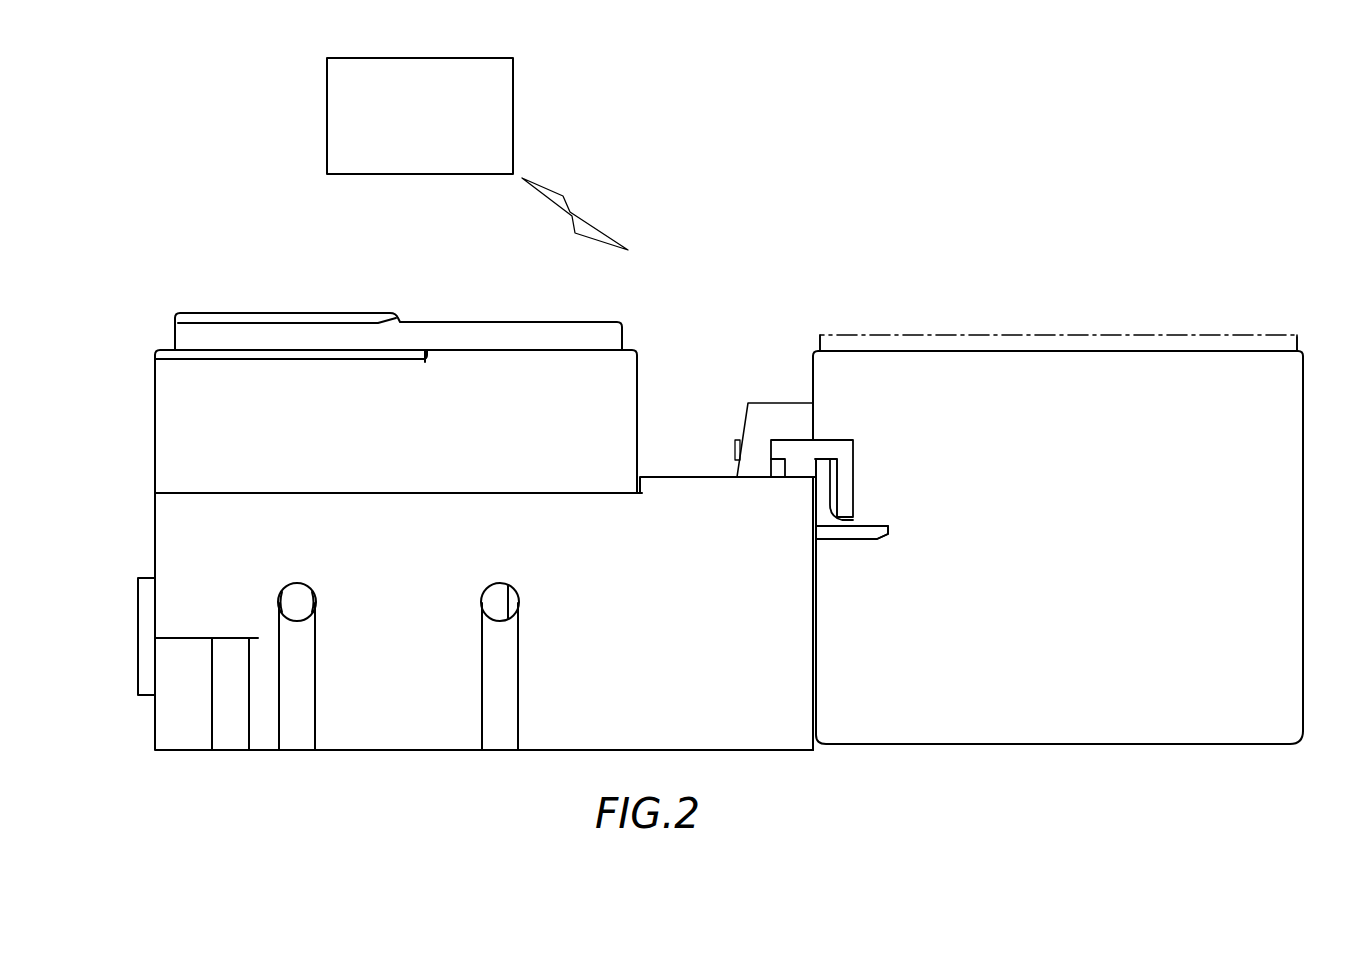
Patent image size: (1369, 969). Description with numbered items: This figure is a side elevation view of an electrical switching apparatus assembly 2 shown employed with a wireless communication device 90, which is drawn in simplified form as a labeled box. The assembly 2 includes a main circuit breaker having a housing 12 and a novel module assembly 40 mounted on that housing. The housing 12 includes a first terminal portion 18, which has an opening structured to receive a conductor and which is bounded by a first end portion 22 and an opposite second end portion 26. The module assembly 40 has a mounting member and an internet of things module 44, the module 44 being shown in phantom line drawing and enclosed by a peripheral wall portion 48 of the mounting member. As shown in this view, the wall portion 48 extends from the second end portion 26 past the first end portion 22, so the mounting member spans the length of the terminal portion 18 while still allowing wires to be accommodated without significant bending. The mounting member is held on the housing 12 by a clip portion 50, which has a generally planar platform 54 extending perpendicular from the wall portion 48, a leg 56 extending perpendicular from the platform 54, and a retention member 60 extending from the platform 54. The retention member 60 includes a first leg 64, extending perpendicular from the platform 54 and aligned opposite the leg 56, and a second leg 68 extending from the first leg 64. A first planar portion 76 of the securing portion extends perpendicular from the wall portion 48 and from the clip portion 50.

The electrical switching apparatus assembly 2 is at (1058, 165).
The housing 12 is at (740, 726).
The first terminal portion 18 is at (795, 612).
The first end portion 22 is at (707, 477).
The second end portion 26 is at (803, 752).
The module assembly 40 is at (1084, 468).
The internet of things (IOT) module 44 is at (1090, 332).
The peripheral wall portion 48 is at (1287, 697).
The clip portion 50 is at (922, 548).
The platform 54 is at (804, 469).
The leg 56 is at (775, 467).
The retention member 60 is at (904, 539).
The first leg 64 is at (820, 493).
The second leg 68 is at (880, 524).
The first planar portion 76 is at (767, 415).
The wireless communication device 90 is at (520, 102).